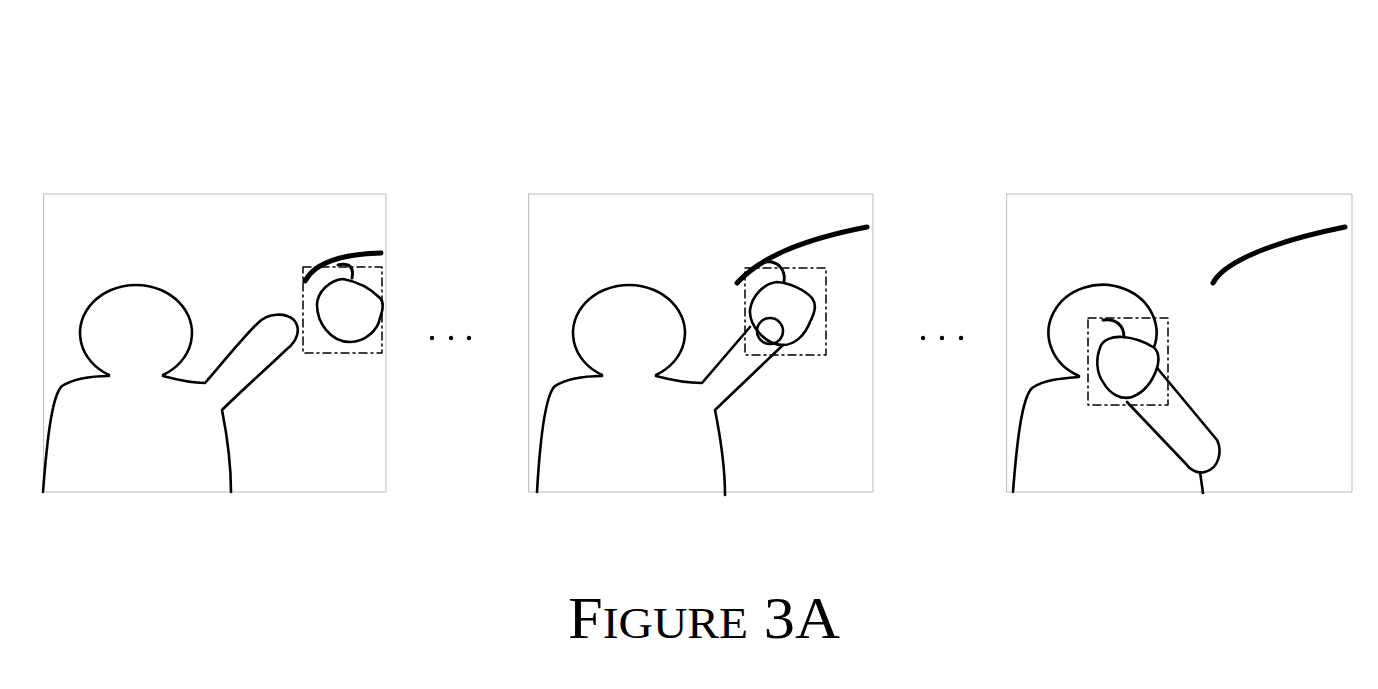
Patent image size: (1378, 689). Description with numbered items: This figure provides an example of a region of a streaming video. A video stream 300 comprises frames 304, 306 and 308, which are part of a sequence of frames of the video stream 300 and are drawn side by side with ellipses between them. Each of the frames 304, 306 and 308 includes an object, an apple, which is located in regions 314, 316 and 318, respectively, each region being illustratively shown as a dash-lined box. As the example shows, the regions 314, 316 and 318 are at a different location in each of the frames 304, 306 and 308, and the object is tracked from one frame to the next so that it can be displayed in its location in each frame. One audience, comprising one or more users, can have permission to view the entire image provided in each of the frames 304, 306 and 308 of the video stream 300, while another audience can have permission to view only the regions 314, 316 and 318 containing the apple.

The video stream 300 is at (630, 70).
The frame 304 is at (210, 168).
The frame 306 is at (692, 168).
The frame 308 is at (1178, 168).
The region 314 is at (345, 355).
The region 316 is at (788, 357).
The region 318 is at (1103, 407).